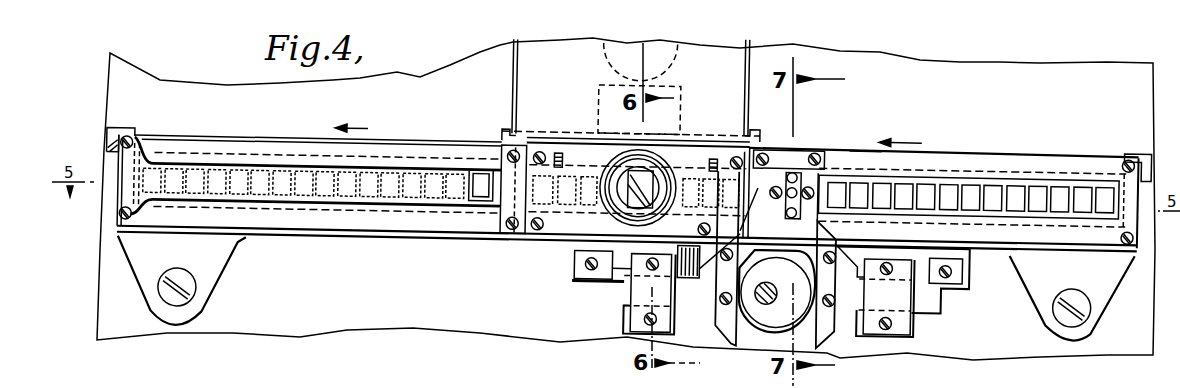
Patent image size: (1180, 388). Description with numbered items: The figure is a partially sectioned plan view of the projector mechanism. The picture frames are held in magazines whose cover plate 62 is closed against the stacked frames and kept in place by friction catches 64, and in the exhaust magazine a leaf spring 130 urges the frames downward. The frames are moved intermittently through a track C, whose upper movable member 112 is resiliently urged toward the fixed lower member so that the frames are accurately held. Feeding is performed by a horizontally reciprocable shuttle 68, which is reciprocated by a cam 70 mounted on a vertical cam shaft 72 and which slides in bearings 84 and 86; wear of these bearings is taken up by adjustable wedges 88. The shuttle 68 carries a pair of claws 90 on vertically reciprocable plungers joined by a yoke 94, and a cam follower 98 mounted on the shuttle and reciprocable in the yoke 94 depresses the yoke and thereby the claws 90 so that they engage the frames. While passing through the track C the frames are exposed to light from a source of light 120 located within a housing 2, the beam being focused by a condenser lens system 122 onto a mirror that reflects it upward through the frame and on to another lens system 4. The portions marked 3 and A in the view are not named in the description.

The housing 2 is at (632, 86).
The left body section 3 is at (309, 184).
The lens system 4 is at (662, 168).
The cover plate 62 is at (231, 151).
The friction catches 64 is at (138, 133).
The shuttle 68 is at (832, 314).
The cam 70 is at (777, 306).
The vertical cam shaft 72 is at (764, 296).
The bearing 84 is at (641, 299).
The bearing 86 is at (794, 146).
The adjustable wedges 88 is at (609, 259).
The claws 90 is at (808, 162).
The yoke 94 is at (750, 221).
The cam follower 98 is at (867, 137).
The upper movable member 112 is at (560, 217).
The source of light 120 is at (654, 44).
The condenser lens system 122 is at (686, 92).
The leaf spring 130 is at (260, 181).
The right body section A is at (1057, 202).
The track C is at (972, 157).